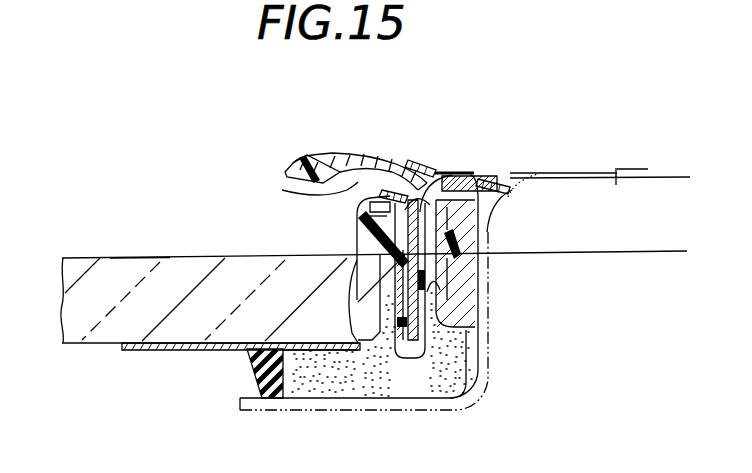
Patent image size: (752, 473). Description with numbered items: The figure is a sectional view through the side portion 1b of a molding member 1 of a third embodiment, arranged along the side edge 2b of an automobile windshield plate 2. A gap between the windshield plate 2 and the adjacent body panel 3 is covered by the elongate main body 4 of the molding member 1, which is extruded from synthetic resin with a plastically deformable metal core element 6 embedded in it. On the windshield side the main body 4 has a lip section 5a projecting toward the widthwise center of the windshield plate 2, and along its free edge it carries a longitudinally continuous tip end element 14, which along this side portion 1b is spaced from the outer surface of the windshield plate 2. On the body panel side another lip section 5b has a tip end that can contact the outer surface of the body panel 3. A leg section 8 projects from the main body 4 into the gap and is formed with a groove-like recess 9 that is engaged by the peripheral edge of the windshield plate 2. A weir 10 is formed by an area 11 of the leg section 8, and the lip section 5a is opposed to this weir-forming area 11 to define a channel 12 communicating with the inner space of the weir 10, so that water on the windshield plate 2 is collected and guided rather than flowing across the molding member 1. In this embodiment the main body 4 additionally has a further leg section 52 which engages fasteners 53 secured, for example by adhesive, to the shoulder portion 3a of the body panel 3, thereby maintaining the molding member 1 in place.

The molding member 1 is at (395, 148).
The side portion 1b is at (476, 173).
The windshield plate 2 is at (78, 262).
The side edge 2b is at (145, 259).
The body panel 3 is at (594, 174).
The shoulder portion 3a is at (489, 343).
The main body 4 is at (433, 162).
The lip section 5a is at (342, 154).
The lip section 5b is at (507, 186).
The core element 6 is at (368, 153).
The leg section 8 is at (412, 358).
The groove-like recess 9 is at (353, 353).
The weir 10 is at (360, 222).
The weir-forming area 11 is at (357, 239).
The channel 12 is at (355, 184).
The tip end element 14 is at (317, 157).
The leg section 52 is at (462, 236).
The fasteners 53 is at (463, 281).